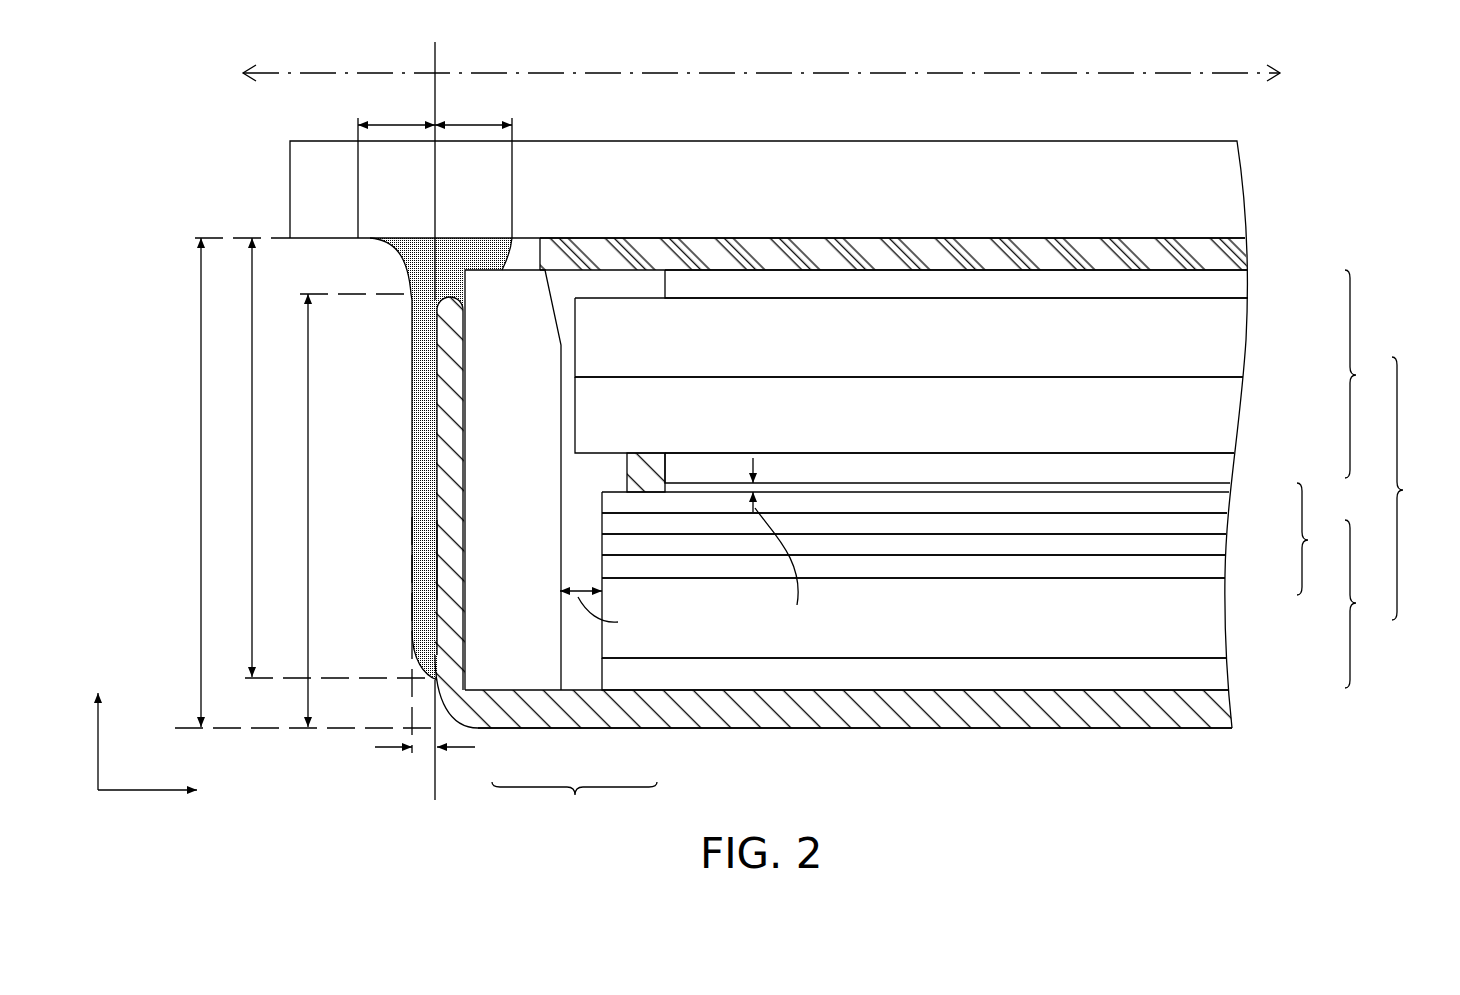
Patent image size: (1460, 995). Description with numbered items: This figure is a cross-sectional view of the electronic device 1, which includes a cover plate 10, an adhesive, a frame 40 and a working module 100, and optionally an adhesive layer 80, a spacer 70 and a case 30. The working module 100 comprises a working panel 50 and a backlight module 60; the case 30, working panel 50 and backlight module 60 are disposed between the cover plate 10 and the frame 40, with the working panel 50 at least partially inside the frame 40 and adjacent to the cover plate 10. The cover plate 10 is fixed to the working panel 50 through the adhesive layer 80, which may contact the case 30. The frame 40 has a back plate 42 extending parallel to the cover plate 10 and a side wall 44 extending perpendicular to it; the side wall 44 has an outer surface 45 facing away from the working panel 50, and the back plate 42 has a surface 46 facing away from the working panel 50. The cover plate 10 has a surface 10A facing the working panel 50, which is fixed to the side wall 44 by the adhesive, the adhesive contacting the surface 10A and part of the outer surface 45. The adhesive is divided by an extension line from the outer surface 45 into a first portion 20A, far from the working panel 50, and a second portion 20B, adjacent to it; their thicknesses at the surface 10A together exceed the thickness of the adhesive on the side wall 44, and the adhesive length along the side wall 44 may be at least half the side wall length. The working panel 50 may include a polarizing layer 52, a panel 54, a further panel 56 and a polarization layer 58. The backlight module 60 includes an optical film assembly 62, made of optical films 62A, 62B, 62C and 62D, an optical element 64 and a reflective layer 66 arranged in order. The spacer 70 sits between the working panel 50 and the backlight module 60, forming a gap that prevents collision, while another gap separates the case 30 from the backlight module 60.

The electronic device 1 is at (174, 86).
The cover plate 10 is at (1210, 192).
The surface 10A is at (354, 251).
The first portion 20A is at (414, 346).
The second portion 20B is at (487, 254).
The case 30 is at (497, 390).
The frame 40 is at (833, 562).
The back plate 42 is at (638, 705).
The side wall 44 is at (452, 612).
The outer surface 45 is at (434, 552).
The surface 46 is at (745, 740).
The working panel 50 is at (985, 376).
The polarizing layer 52 is at (1218, 287).
The panel 54 is at (1210, 340).
The panel 56 is at (1210, 417).
The polarization layer 58 is at (1200, 466).
The backlight module 60 is at (998, 586).
The optical film assembly 62 is at (975, 539).
The optical film 62A is at (1205, 503).
The optical film 62B is at (1185, 526).
The optical film 62C is at (1185, 548).
The optical film 62D is at (1185, 568).
The optical element 64 is at (1177, 623).
The reflective layer 66 is at (1177, 676).
The spacer 70 is at (627, 478).
The adhesive layer 80 is at (1185, 258).
The working module 100 is at (1015, 479).